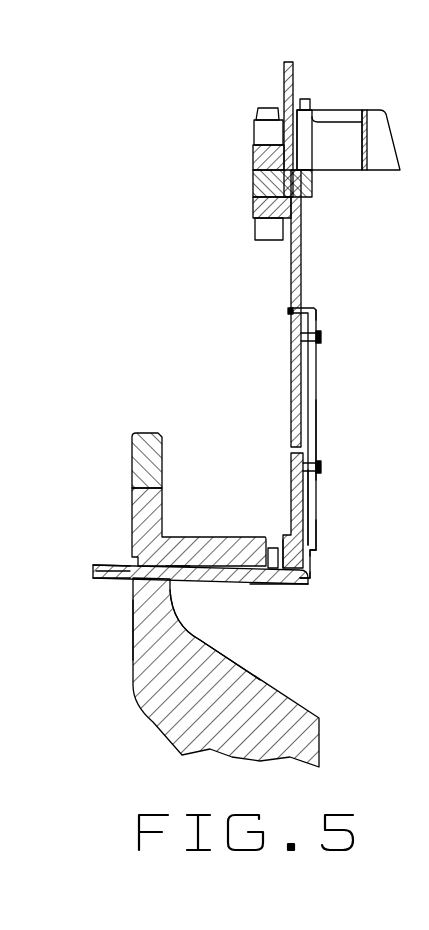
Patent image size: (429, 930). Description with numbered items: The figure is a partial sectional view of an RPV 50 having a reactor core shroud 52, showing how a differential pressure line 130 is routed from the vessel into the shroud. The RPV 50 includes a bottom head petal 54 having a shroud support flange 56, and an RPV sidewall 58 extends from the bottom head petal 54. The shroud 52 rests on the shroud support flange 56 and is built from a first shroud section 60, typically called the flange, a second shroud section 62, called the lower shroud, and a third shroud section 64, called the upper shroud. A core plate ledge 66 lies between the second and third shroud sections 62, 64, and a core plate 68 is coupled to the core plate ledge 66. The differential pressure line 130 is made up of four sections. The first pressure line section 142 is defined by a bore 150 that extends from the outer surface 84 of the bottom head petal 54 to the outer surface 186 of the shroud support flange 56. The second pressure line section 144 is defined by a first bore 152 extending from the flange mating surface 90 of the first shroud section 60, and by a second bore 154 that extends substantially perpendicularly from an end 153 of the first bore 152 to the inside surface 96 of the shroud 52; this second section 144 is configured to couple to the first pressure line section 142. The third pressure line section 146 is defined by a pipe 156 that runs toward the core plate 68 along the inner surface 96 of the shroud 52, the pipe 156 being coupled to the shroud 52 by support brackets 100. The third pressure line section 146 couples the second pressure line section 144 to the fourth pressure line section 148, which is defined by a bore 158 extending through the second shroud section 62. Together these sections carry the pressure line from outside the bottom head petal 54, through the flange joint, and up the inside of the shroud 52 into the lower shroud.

The RPV 50 is at (207, 72).
The reactor core shroud 52 is at (260, 344).
The bottom head petal 54 is at (145, 720).
The shroud support flange 56 is at (270, 583).
The RPV sidewall 58 is at (132, 455).
The first shroud section 60 is at (291, 401).
The second shroud section 62 is at (291, 258).
The third shroud section 64 is at (284, 82).
The core plate ledge 66 is at (253, 183).
The core plate 68 is at (345, 110).
The outer surface 84 is at (132, 630).
The flange mating surface 90 is at (268, 540).
The inside surface 96 is at (318, 487).
The support brackets 100 is at (321, 337).
The differential pressure line 130 is at (177, 566).
The first pressure line section 142 is at (211, 587).
The second pressure line section 144 is at (313, 555).
The third pressure line section 146 is at (317, 441).
The fourth pressure line section 148 is at (300, 292).
The bore 150 is at (93, 569).
The first bore 152 is at (296, 585).
The end 153 is at (283, 540).
The second bore 154 is at (312, 533).
The pipe 156 is at (317, 383).
The bore 158 is at (288, 311).
The outer surface 186 is at (305, 578).